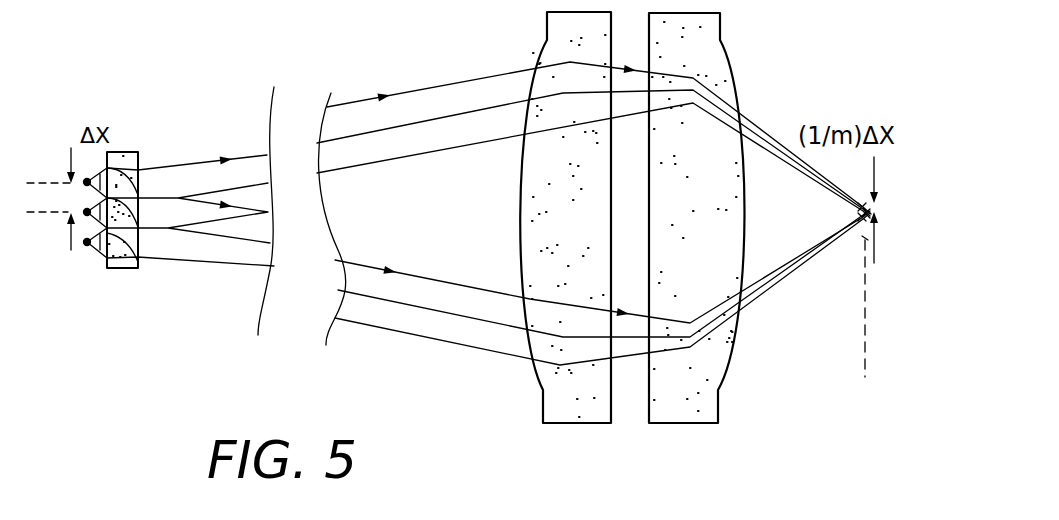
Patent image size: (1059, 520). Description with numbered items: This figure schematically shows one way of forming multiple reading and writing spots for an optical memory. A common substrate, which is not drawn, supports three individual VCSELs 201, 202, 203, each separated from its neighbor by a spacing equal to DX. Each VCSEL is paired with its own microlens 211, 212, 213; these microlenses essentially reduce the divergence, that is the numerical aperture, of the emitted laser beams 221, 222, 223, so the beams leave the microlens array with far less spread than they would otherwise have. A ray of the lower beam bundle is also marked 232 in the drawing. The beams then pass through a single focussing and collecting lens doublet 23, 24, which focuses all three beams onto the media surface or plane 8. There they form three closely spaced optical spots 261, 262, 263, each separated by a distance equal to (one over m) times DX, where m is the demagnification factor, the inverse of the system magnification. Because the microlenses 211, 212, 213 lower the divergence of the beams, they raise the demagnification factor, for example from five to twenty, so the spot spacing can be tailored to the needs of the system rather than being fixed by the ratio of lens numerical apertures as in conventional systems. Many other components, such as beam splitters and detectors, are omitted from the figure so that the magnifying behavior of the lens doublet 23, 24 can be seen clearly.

The VCSEL 201 is at (127, 152).
The VCSEL 202 is at (84, 212).
The VCSEL 203 is at (87, 243).
The microlens 211 is at (136, 170).
The microlens 212 is at (137, 207).
The microlens 213 is at (137, 262).
The laser beam 221 is at (420, 89).
The laser beam 222 is at (423, 124).
The laser beam 223 is at (360, 166).
The light beam (lower bundle ray) 232 is at (442, 341).
The focussing and collecting lens doublet 23 is at (575, 410).
The focussing and collecting lens doublet 24 is at (673, 412).
The optical spot 261 is at (832, 208).
The optical spot 262 is at (845, 218).
The optical spot 263 is at (863, 238).
The media surface or plane 8 is at (865, 282).